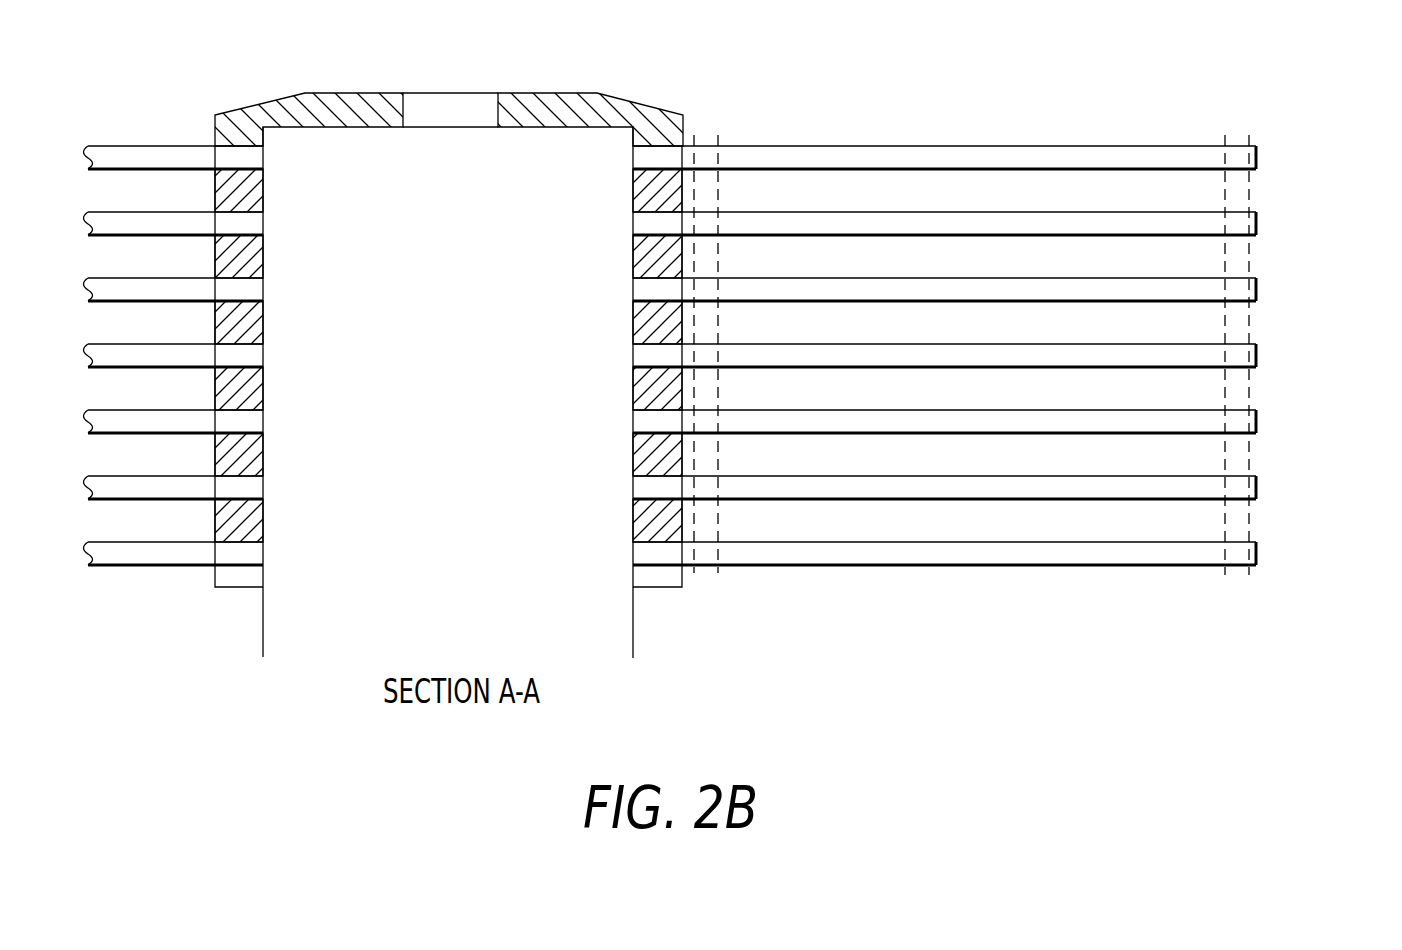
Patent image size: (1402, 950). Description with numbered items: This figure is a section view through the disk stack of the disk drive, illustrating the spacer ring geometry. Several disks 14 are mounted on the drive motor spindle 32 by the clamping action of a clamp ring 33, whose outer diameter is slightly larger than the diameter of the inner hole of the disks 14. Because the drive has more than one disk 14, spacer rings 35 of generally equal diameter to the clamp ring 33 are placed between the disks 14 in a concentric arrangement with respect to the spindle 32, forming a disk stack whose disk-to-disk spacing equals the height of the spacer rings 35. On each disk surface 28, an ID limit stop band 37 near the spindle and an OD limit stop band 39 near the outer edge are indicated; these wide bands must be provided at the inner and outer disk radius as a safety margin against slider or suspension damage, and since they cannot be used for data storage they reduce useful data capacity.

The disk 14 is at (1083, 153).
The disk surface 28 is at (1198, 277).
The drive motor spindle 32 is at (633, 632).
The clamp ring 33 is at (633, 102).
The spacer ring 35 is at (682, 192).
The ID limit stop band 37 is at (705, 572).
The OD limit stop band 39 is at (1238, 575).